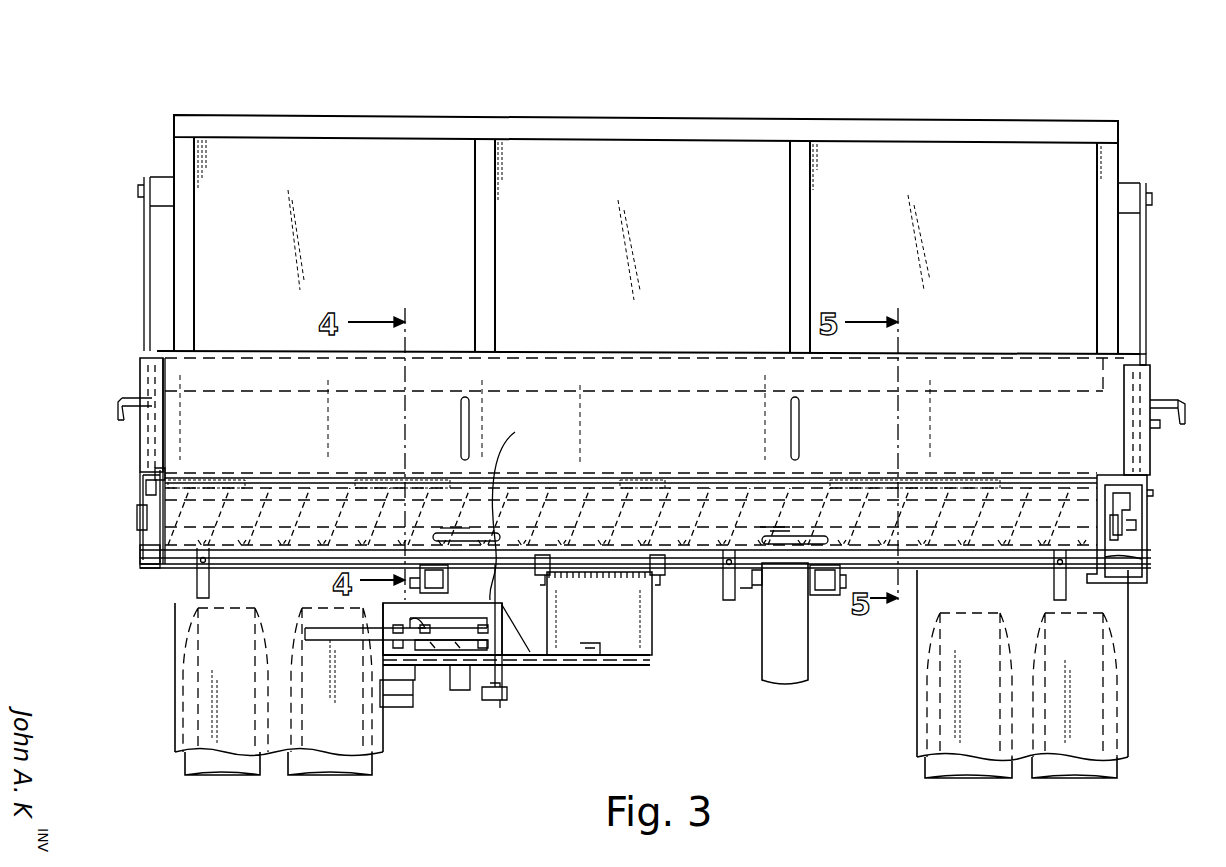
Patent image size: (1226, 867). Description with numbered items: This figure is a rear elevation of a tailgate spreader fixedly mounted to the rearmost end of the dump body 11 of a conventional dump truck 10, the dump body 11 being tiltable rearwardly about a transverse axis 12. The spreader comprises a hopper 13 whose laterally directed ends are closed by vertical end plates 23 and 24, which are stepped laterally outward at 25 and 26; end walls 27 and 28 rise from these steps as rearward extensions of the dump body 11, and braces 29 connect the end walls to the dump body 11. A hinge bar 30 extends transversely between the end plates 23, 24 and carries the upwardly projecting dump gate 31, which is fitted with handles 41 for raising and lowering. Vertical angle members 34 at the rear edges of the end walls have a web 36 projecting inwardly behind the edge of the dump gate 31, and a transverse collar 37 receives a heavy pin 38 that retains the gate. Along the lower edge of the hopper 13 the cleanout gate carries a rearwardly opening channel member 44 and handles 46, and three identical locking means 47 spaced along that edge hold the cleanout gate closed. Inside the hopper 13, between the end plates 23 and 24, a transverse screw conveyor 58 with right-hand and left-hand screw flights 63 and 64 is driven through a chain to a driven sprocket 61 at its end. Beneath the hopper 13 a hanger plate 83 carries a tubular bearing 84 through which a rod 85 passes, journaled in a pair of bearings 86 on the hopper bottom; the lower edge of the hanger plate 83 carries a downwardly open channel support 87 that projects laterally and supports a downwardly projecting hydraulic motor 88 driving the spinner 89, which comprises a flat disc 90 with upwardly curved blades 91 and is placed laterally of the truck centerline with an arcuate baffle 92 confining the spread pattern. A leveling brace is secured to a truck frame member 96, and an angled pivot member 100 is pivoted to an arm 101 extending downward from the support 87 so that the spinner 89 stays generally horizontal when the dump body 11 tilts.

The dump truck 10 is at (55, 380).
The dump body 11 is at (174, 130).
The transverse axis 12 is at (755, 586).
The hopper 13 is at (105, 520).
The vertical end plate 23 is at (146, 538).
The vertical end plate 24 is at (1105, 558).
The step 25 is at (156, 474).
The step 26 is at (1118, 478).
The end wall 27 is at (142, 438).
The end wall 28 is at (1150, 450).
The brace 29 is at (148, 265).
The hinge bar 30 is at (625, 478).
The dump gate 31 is at (1018, 400).
The vertical angle member 34 is at (1150, 378).
The web 36 is at (1126, 392).
The transverse collar 37 is at (1156, 400).
The pin 38 is at (118, 403).
The handle 41 is at (800, 430).
The channel member 44 is at (322, 555).
The handle 46 is at (832, 498).
The locking means 47 is at (197, 572).
The screw conveyor 58 is at (400, 498).
The driven sprocket 61 is at (1146, 537).
The right-hand screw flight 63 is at (265, 500).
The left-hand screw flight 64 is at (955, 512).
The hanger plate 83 is at (620, 645).
The tubular bearing 84 is at (548, 585).
The rod 85 is at (660, 575).
The bearing 86 is at (650, 600).
The channel shape support 87 is at (538, 665).
The hydraulic motor 88 is at (413, 680).
The spinner 89 is at (358, 640).
The flat disc 90 is at (305, 630).
The blade 91 is at (340, 635).
The arcuate baffle 92 is at (515, 432).
The truck frame member 96 is at (790, 657).
The angled pivot member 100 is at (492, 706).
The arm 101 is at (455, 690).